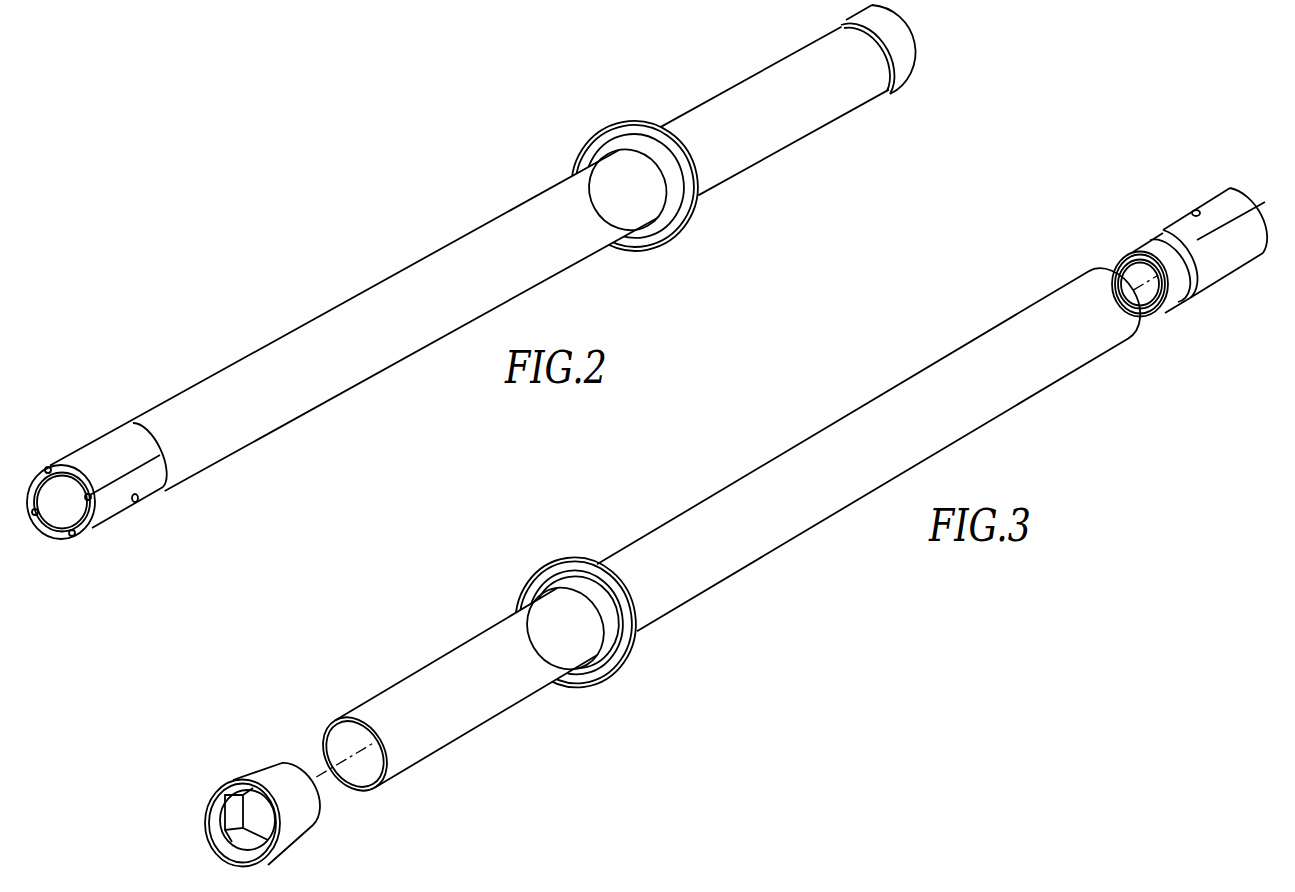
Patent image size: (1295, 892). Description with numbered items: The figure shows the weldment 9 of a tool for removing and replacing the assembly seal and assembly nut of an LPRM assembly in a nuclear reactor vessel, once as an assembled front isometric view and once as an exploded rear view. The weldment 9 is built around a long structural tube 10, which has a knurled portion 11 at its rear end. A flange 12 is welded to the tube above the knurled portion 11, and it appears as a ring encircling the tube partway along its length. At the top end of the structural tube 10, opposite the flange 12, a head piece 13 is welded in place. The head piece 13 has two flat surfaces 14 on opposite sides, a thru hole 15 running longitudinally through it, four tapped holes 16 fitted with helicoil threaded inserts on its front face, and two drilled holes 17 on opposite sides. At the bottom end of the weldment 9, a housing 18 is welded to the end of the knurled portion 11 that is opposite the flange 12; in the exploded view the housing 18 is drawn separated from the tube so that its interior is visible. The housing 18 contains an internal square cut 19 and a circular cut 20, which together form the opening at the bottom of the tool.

In FIG. 2, the weldment 9 is at (318, 297).
In FIG. 3, the weldment 9 is at (748, 447).
In FIG. 2, the structural tube 10 is at (373, 363).
In FIG. 3, the structural tube 10 is at (803, 510).
In FIG. 2, the knurled portion 11 is at (752, 150).
In FIG. 2, the flange 12 is at (645, 245).
In FIG. 3, the flange 12 is at (618, 687).
In FIG. 2, the head piece 13 is at (110, 515).
In FIG. 3, the head piece 13 is at (1220, 291).
In FIG. 2, the flat surfaces 14 is at (112, 452).
In FIG. 3, the flat surfaces 14 is at (1232, 260).
In FIG. 2, the thru hole 15 is at (62, 510).
In FIG. 2, the tapped holes 16 is at (48, 466).
In FIG. 2, the drilled holes 17 is at (137, 502).
In FIG. 3, the drilled holes 17 is at (1194, 210).
In FIG. 2, the housing 18 is at (905, 62).
In FIG. 3, the housing 18 is at (294, 849).
In FIG. 3, the internal square cut 19 is at (230, 810).
In FIG. 3, the circular cut 20 is at (230, 858).